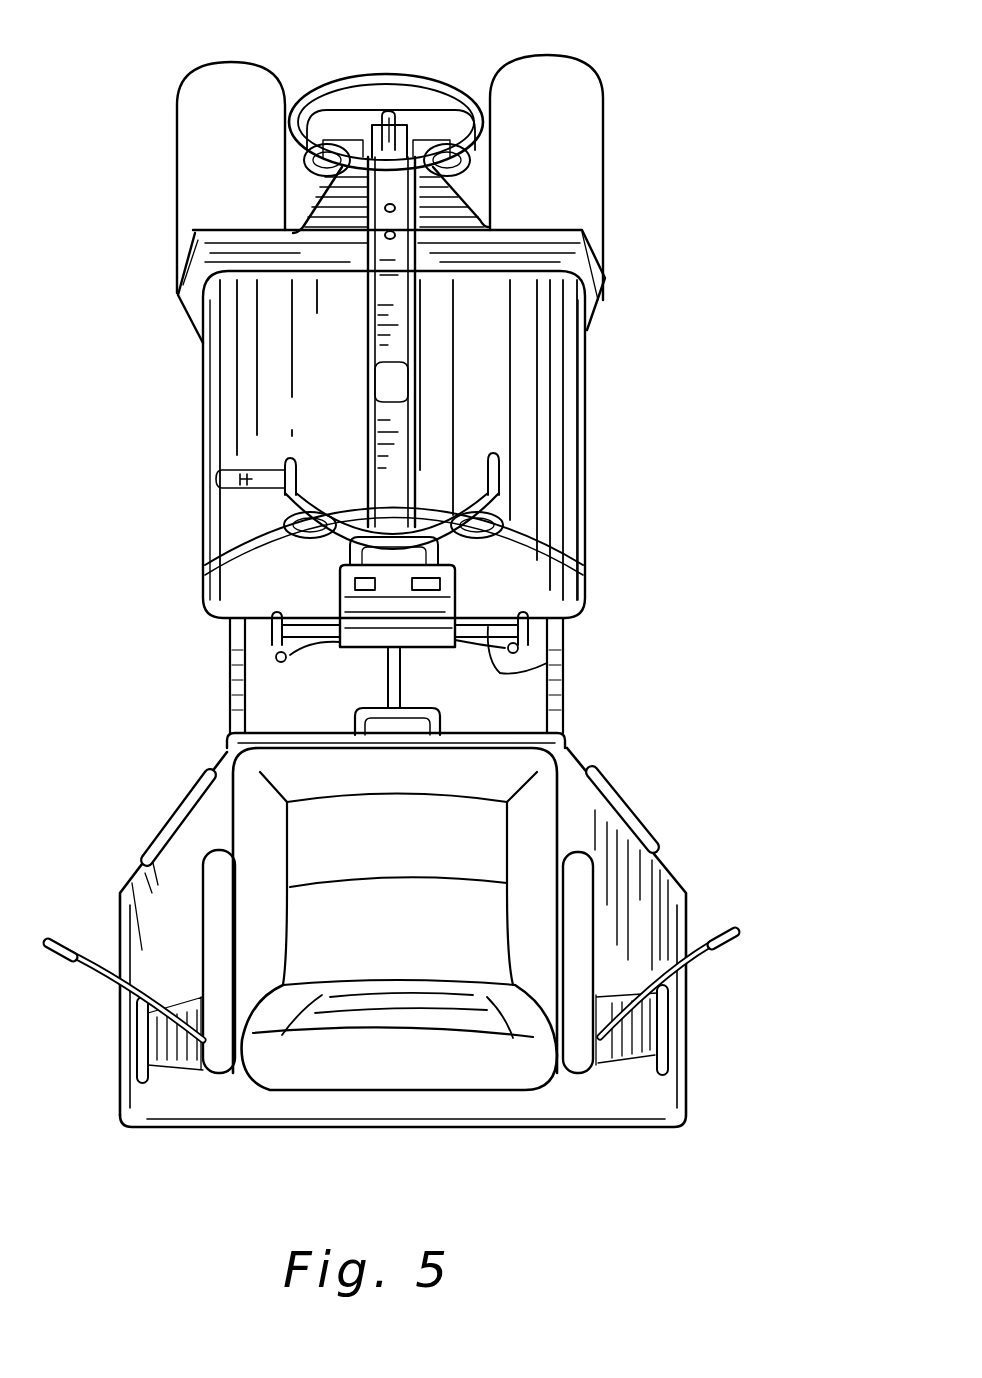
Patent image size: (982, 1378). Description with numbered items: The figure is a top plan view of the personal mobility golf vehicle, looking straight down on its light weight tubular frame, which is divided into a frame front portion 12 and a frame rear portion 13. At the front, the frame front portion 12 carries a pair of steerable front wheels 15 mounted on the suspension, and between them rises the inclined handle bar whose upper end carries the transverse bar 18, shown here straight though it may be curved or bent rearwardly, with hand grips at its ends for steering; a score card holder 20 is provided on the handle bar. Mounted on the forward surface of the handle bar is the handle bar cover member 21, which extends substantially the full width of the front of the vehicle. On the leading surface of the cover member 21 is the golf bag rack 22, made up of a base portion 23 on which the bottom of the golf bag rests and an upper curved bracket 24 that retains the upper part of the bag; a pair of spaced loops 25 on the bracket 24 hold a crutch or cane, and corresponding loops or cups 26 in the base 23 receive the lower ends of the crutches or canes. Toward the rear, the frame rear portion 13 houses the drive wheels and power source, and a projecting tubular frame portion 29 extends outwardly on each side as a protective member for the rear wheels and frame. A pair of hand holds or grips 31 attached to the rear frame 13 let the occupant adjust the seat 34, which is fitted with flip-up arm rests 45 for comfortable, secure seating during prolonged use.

The frame front portion 12 is at (565, 635).
The frame rear portion 13 is at (680, 900).
The steerable front wheels 15 is at (193, 103).
The transverse bar 18 is at (560, 667).
The score card holder 20 is at (440, 595).
The handle bar cover member 21 is at (528, 418).
The golf bag rack 22 is at (392, 413).
The base portion 23 is at (350, 73).
The upper curved bracket 24 is at (510, 485).
The spaced loops 25 is at (315, 540).
The loops or cups 26 is at (485, 163).
The projecting tubular frame portion 29 is at (660, 847).
The hand holds or grips 31 is at (668, 1023).
The seat 34 is at (500, 1065).
The flip-up arm rests 45 is at (578, 920).